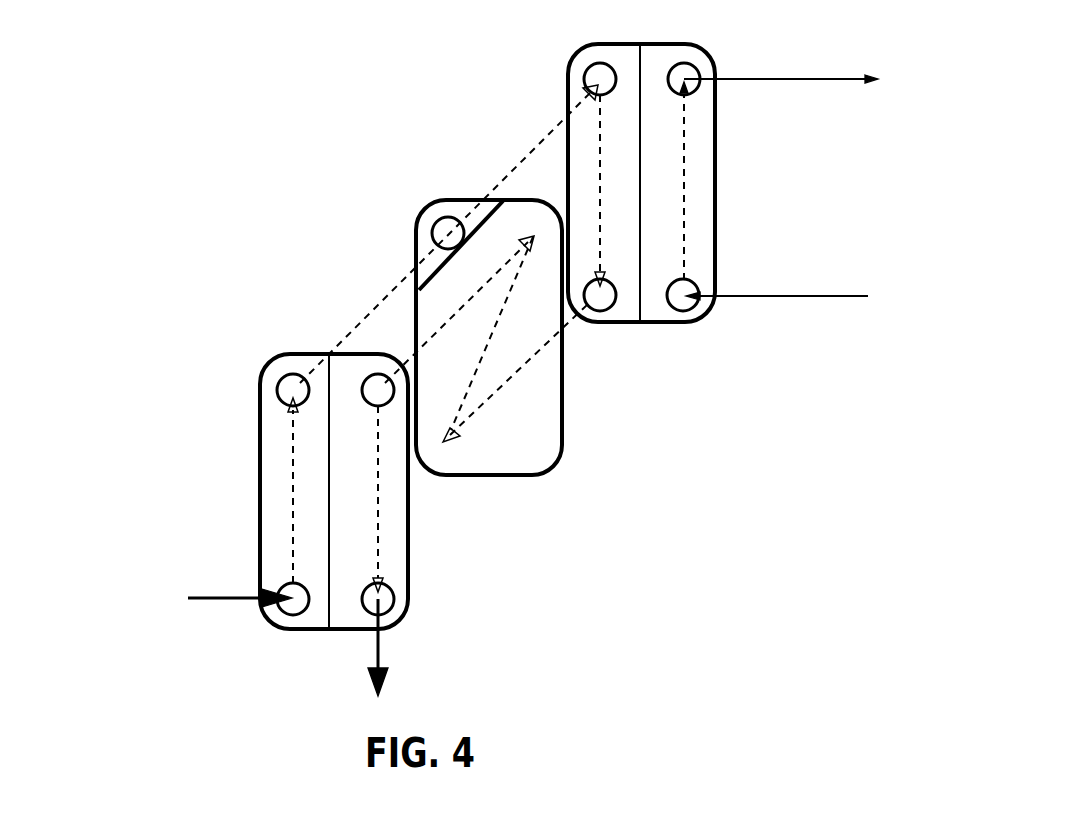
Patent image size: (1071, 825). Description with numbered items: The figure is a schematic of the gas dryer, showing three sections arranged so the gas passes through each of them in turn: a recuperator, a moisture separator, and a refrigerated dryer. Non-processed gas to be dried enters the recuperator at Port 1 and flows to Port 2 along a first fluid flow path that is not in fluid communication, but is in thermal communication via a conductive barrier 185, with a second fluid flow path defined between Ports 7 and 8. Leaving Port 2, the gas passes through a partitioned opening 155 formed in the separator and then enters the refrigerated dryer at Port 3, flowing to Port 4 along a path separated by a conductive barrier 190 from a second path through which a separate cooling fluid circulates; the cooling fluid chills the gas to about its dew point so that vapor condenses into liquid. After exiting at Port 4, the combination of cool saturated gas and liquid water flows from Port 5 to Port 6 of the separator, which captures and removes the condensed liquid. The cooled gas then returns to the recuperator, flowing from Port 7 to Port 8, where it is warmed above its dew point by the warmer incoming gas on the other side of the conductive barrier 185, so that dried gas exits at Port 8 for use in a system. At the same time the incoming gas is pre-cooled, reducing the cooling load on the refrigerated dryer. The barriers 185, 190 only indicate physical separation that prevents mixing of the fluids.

The Port 1 is at (248, 578).
The Port 2 is at (412, 334).
The Port 3 is at (590, 47).
The Port 4 is at (603, 233).
The Port 5 is at (515, 387).
The Port 6 is at (505, 333).
The Port 7 is at (437, 414).
The Port 8 is at (396, 639).
The partitioned opening 155 is at (440, 226).
The conductive barrier 185 is at (328, 628).
The conductive barrier 190 is at (640, 296).